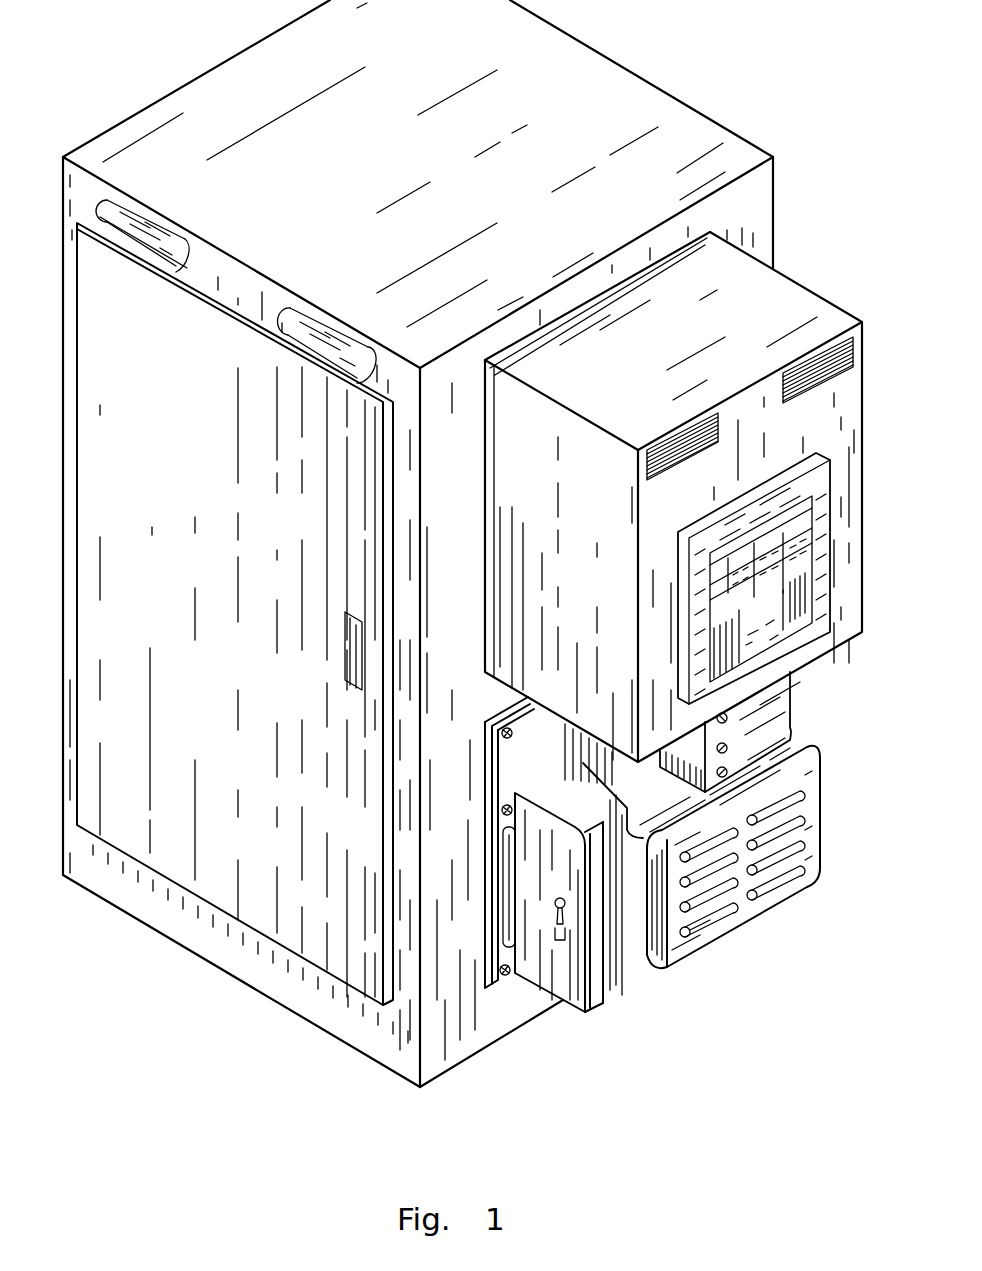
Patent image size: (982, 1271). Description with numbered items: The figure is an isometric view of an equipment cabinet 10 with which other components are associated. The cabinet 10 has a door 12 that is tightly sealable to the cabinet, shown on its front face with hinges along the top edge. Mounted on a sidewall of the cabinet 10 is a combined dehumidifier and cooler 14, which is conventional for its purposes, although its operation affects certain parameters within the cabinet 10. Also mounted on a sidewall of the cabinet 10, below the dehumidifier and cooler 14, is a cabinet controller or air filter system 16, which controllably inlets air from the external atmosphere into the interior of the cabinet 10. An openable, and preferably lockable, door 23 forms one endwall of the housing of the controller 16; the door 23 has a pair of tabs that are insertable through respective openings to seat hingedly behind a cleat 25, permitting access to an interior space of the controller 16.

The equipment cabinet 10 is at (206, 57).
The door 12 is at (107, 325).
The combined dehumidifier and cooler 14 is at (803, 298).
The cabinet controller or air filter system 16 is at (574, 905).
The door 23 is at (557, 992).
The cleat 25 is at (505, 948).